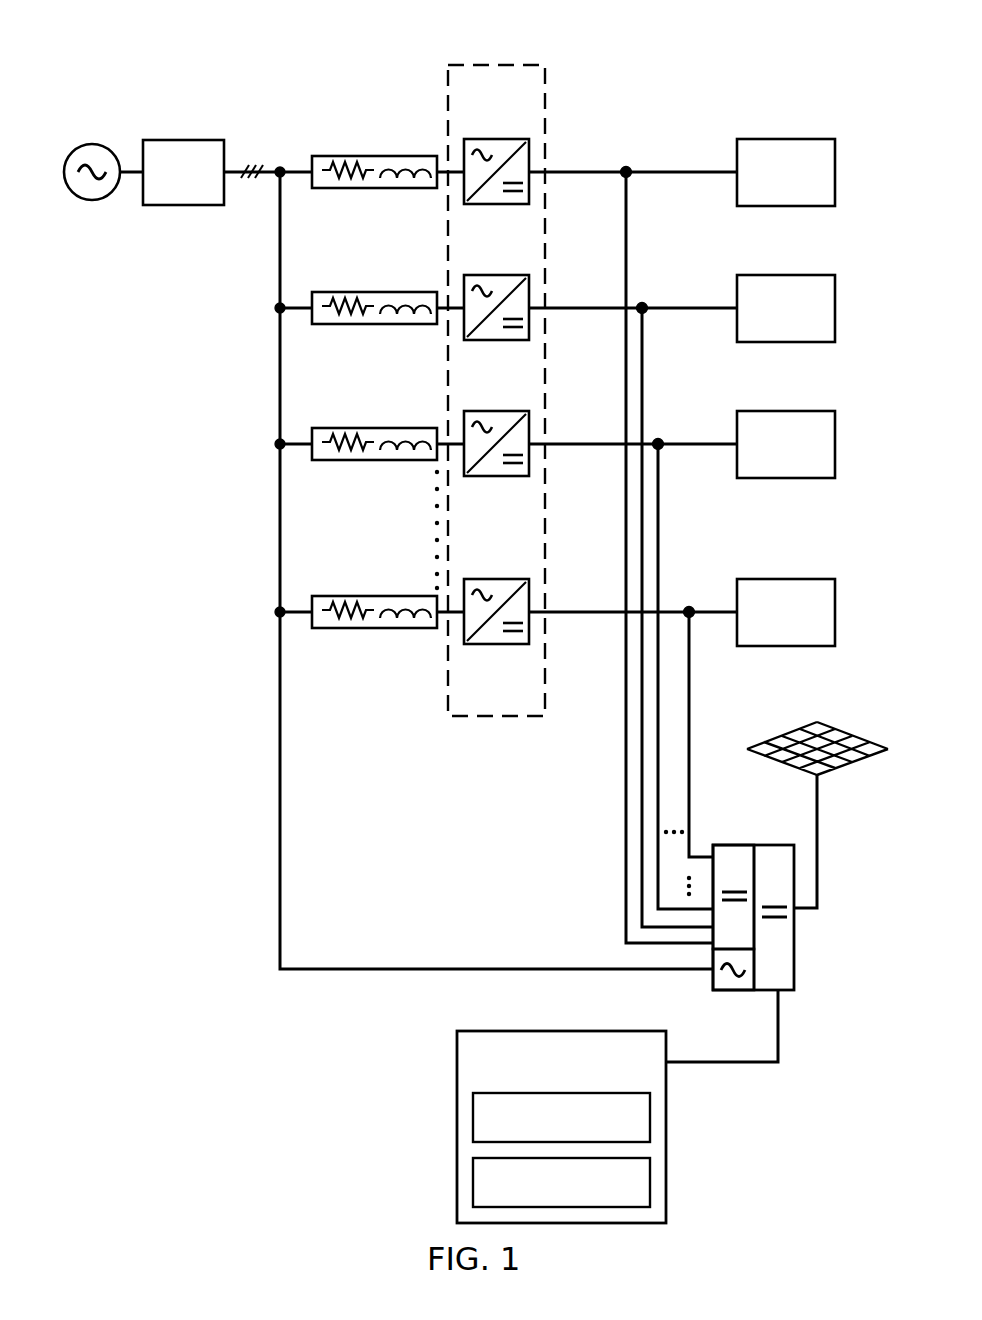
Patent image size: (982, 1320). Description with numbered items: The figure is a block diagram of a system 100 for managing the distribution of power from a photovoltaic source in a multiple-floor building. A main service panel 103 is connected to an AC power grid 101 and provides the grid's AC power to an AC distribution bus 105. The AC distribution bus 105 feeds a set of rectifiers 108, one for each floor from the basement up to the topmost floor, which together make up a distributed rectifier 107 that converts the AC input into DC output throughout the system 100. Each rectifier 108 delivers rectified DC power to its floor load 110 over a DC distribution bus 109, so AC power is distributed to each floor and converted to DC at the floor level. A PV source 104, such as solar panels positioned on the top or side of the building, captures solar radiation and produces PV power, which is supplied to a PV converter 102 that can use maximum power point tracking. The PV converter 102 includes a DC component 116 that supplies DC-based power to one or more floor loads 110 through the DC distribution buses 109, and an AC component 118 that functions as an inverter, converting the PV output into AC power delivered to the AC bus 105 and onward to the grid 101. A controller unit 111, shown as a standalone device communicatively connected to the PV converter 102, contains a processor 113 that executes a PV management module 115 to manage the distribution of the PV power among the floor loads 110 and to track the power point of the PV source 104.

The system 100 is at (121, 52).
The AC power grid 101 is at (91, 143).
The PV converter 102 is at (796, 953).
The main service panel 103 is at (180, 140).
The PV source 104 is at (843, 728).
The AC distribution bus 105 is at (278, 363).
The distributed rectifier 107 is at (447, 80).
The rectifier 108 is at (491, 140).
The DC distribution bus 109 is at (580, 170).
The floor load 110 is at (795, 138).
The controller unit 111 is at (456, 1058).
The processor 113 is at (472, 1118).
The PV management module 115 is at (472, 1183).
The DC component 116 is at (733, 845).
The AC component 118 is at (733, 992).